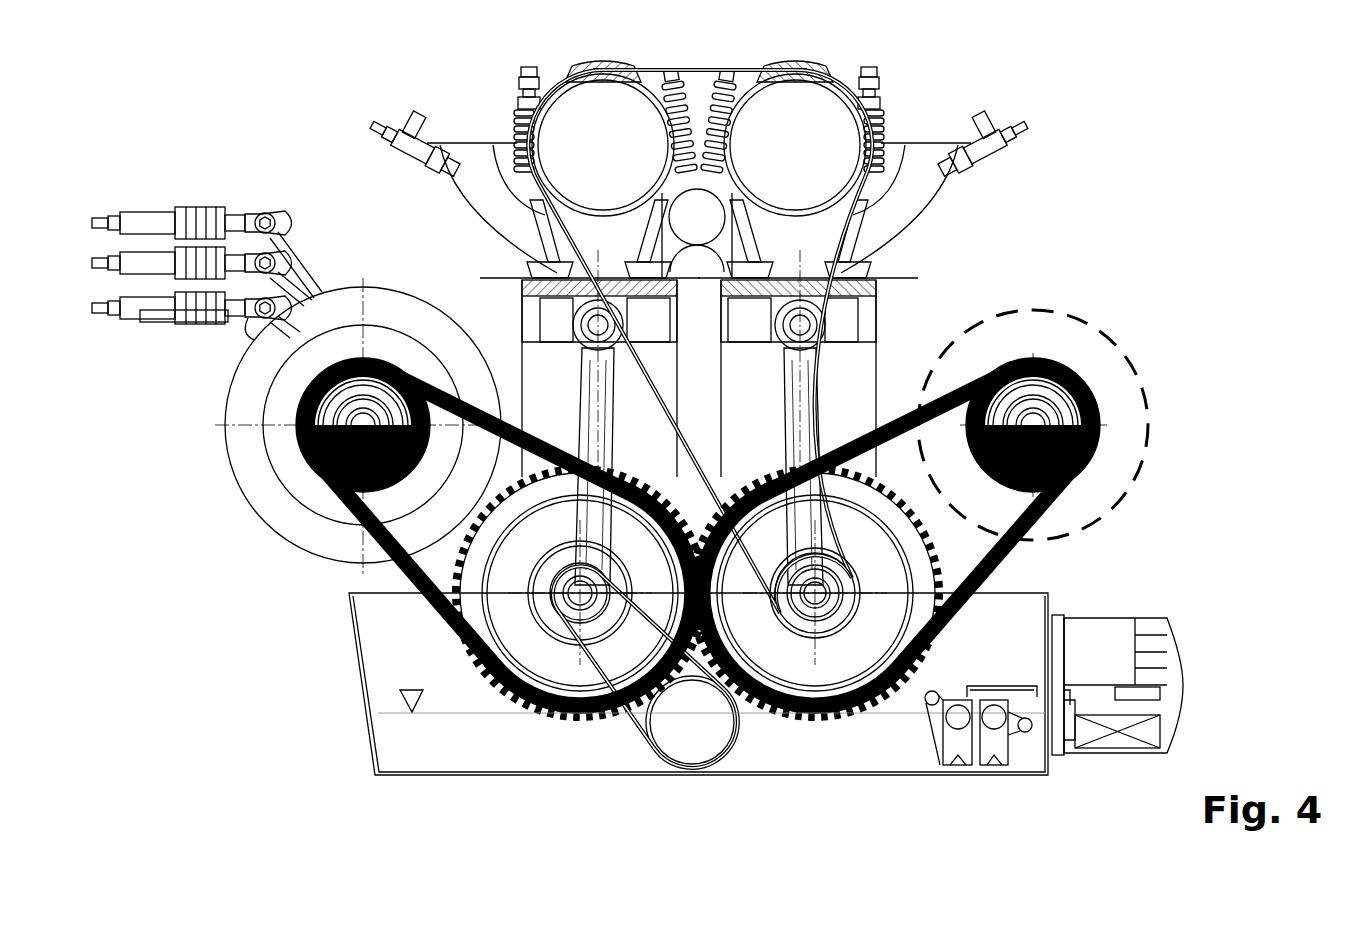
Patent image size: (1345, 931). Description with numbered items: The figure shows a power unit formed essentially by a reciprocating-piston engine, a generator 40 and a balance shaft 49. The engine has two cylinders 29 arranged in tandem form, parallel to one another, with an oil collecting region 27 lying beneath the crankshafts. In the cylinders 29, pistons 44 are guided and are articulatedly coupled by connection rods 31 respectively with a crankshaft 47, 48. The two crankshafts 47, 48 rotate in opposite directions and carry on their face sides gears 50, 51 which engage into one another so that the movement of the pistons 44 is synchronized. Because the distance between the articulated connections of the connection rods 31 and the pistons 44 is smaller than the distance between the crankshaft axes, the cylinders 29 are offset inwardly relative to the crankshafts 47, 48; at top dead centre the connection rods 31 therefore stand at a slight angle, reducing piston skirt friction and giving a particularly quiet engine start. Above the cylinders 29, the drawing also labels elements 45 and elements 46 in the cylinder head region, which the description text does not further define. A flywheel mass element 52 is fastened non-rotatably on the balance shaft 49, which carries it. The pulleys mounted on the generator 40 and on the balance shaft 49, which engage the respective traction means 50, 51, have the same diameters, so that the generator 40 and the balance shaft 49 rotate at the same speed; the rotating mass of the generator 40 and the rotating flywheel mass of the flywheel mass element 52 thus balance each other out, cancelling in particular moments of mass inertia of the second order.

The oil collecting region 27 is at (398, 745).
The cylinder 29 is at (548, 387).
The connection rod 31 is at (592, 432).
The generator 40 is at (278, 458).
The piston 44 is at (545, 302).
The intake valve 45 is at (553, 262).
The exhaust valve 46 is at (878, 250).
The crankshaft 47 is at (565, 600).
The crankshaft 48 is at (845, 626).
The balance shaft 49 is at (1057, 400).
The traction means 50 is at (430, 603).
The traction means 51 is at (995, 563).
The flywheel mass element 52 is at (1150, 425).